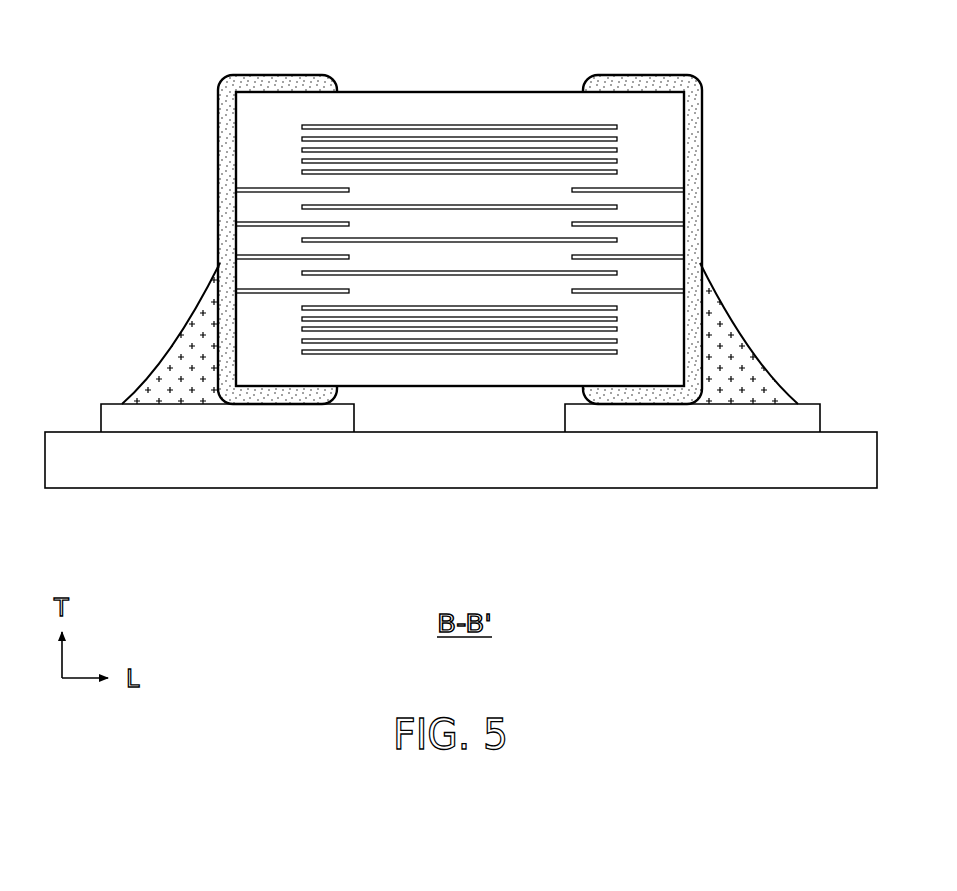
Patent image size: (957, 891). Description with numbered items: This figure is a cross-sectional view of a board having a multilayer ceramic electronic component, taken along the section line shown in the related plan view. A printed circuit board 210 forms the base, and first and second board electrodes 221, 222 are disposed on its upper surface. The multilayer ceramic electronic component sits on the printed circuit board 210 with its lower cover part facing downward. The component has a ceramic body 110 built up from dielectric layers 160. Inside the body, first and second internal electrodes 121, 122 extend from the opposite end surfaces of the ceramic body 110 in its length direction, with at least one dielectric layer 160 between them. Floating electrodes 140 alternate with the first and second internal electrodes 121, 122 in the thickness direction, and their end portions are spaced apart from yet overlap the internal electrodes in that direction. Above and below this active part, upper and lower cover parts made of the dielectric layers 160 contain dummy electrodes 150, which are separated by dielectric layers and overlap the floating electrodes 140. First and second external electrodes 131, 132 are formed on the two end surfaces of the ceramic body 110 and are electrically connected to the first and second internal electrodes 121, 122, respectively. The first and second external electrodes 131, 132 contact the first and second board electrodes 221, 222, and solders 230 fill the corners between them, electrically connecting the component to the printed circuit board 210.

The ceramic body 110 is at (456, 84).
The first internal electrode 121 is at (265, 191).
The second internal electrode 122 is at (653, 227).
The first external electrode 131 is at (258, 84).
The second external electrode 132 is at (662, 84).
The floating electrode 140 is at (597, 217).
The dummy electrode 150 is at (594, 124).
The dielectric layer 160 is at (598, 150).
The printed circuit board 210 is at (466, 478).
The first board electrode 221 is at (221, 422).
The second board electrode 222 is at (700, 422).
The solder 230 is at (178, 347).